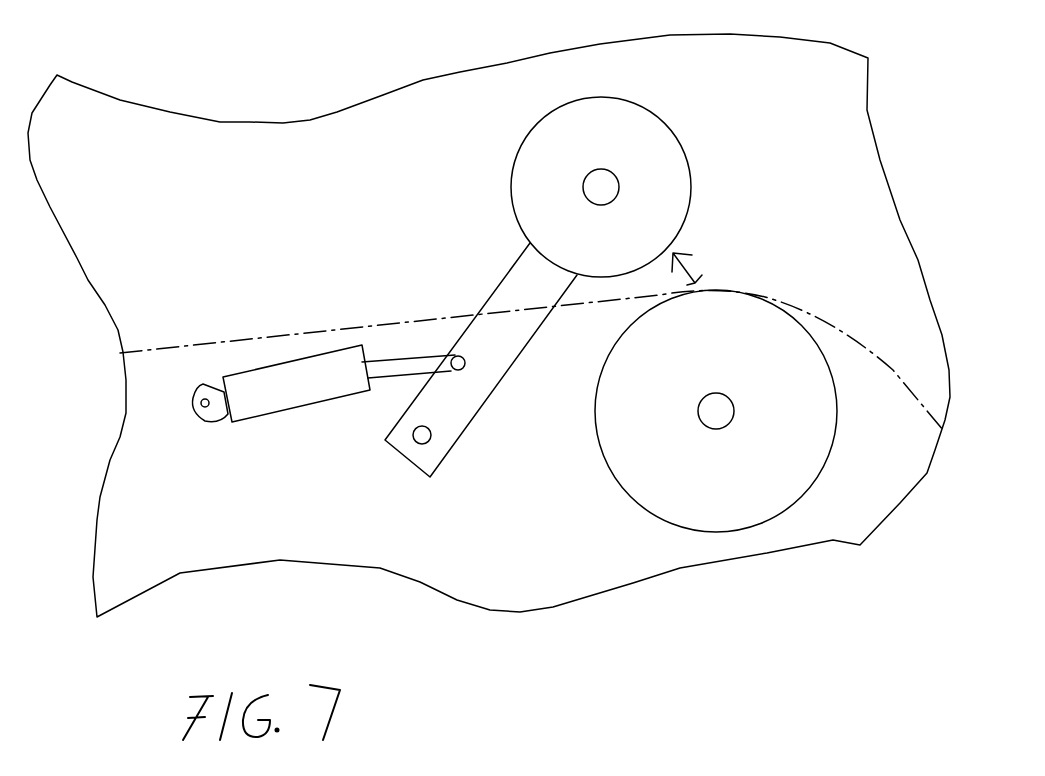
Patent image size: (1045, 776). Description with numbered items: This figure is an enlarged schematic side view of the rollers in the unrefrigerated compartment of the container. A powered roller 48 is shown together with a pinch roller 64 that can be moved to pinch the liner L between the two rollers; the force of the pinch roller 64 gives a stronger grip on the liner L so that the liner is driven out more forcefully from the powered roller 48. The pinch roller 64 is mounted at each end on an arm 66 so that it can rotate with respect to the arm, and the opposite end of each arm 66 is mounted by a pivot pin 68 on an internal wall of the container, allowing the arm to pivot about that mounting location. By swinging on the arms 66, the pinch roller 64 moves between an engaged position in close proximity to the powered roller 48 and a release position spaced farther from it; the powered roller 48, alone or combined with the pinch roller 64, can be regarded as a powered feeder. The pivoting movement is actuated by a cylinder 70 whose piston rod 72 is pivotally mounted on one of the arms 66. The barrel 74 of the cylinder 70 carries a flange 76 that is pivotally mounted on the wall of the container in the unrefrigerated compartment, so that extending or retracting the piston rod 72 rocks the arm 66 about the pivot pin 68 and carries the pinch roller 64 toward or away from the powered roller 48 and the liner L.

The powered roller 48 is at (745, 532).
The pinch roller 64 is at (684, 147).
The arm 66 is at (503, 377).
The pivot pin 68 is at (413, 437).
The cylinder 70 is at (270, 418).
The piston rod 72 is at (403, 372).
The barrel 74 is at (276, 378).
The flange 76 is at (196, 419).
The liner L is at (150, 348).